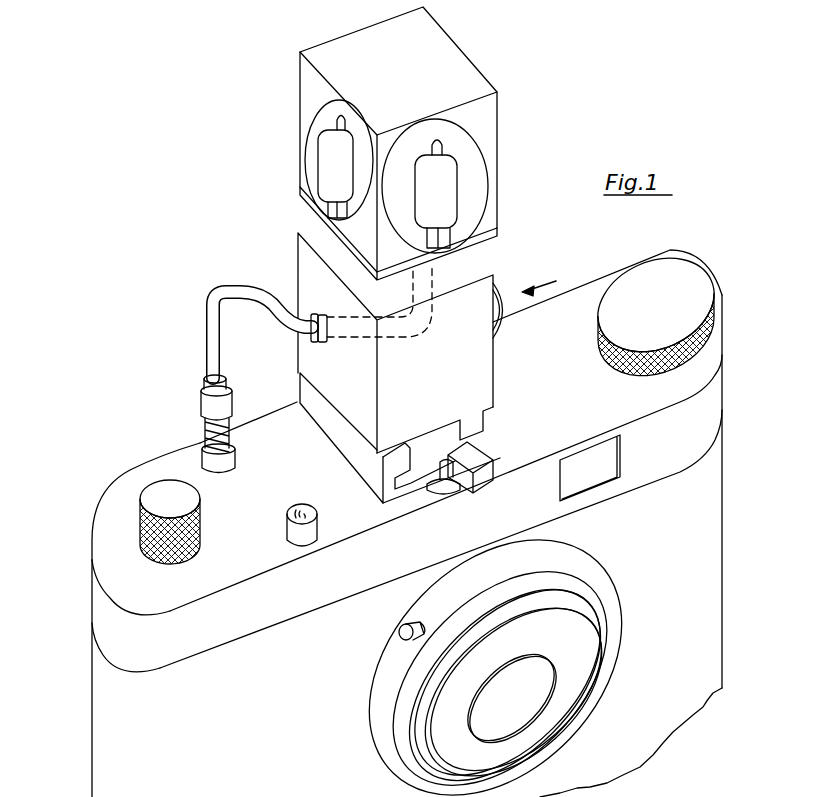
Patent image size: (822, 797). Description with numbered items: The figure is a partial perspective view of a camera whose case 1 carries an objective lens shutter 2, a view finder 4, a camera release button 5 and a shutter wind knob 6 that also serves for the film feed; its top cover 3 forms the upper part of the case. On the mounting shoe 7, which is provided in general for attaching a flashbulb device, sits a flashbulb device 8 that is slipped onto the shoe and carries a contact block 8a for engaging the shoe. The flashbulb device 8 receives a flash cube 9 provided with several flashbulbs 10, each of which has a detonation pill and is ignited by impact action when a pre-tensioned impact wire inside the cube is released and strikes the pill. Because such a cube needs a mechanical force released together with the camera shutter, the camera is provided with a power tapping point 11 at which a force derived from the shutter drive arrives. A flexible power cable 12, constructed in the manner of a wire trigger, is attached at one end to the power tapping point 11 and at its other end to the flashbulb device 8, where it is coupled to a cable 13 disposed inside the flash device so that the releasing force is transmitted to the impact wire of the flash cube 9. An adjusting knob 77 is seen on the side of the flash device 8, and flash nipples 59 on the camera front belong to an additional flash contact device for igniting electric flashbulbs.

The camera case 1 is at (712, 501).
The objective lens shutter 2 is at (598, 601).
The top cover 3 is at (685, 443).
The view finder 4 is at (583, 479).
The camera release button 5 is at (318, 523).
The shutter wind knob 6 is at (680, 285).
The mounting shoe 7 is at (337, 434).
The flashbulb device 8 is at (483, 292).
The contact block 8a is at (477, 457).
The flash cube 9 is at (488, 127).
The flashbulbs 10 is at (327, 160).
The power tapping point 11 is at (236, 458).
The flexible power cable 12 is at (222, 297).
The cable in the flash device 13 is at (413, 330).
The flash nipples 59 is at (403, 636).
The adjusting knob 77 is at (507, 300).